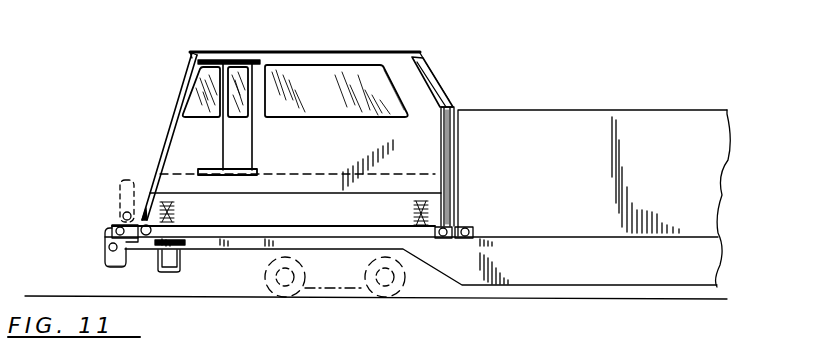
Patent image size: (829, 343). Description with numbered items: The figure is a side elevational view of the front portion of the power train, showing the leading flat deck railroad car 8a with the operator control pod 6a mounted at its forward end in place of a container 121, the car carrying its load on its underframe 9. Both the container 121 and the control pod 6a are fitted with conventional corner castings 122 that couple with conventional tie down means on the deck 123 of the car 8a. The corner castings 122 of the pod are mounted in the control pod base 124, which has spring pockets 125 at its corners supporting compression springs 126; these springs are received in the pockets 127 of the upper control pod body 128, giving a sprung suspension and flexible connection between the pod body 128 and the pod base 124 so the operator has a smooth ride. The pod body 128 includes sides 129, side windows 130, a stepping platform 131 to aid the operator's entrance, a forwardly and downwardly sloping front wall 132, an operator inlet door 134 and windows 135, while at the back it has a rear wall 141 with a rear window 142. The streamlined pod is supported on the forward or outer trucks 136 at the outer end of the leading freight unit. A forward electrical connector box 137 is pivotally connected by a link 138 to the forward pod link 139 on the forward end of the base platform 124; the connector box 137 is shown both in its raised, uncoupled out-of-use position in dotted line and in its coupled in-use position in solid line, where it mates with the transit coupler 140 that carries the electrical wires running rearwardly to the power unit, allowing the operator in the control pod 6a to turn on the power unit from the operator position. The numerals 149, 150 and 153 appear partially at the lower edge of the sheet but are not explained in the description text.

The control pod 6a is at (315, 52).
The car 8a is at (560, 110).
The underframe 9 is at (633, 277).
The container 121 is at (680, 112).
The corner castings 122 is at (135, 180).
The deck 123 is at (510, 237).
The control pod base 124 is at (370, 232).
The spring pockets 125 is at (417, 229).
The compression springs 126 is at (174, 206).
The pockets 127 is at (178, 196).
The control pod body 128 is at (405, 53).
The sides 129 is at (355, 156).
The side windows 130 is at (384, 103).
The stepping platform 131 is at (261, 192).
The front wall 132 is at (176, 111).
The operator inlet door 134 is at (246, 132).
The windows 135 is at (241, 82).
The trucks 136 is at (323, 288).
The connector box 137 is at (107, 257).
The link 138 is at (110, 225).
The forward pod link 139 is at (117, 219).
The transit coupler 140 is at (123, 270).
The rear wall 141 is at (455, 137).
The rear window 142 is at (430, 74).
The support 149 is at (469, 332).
The support 150 is at (401, 338).
The support 153 is at (506, 338).